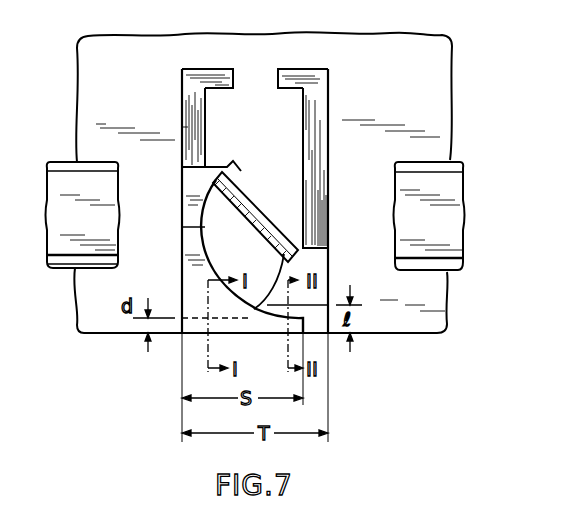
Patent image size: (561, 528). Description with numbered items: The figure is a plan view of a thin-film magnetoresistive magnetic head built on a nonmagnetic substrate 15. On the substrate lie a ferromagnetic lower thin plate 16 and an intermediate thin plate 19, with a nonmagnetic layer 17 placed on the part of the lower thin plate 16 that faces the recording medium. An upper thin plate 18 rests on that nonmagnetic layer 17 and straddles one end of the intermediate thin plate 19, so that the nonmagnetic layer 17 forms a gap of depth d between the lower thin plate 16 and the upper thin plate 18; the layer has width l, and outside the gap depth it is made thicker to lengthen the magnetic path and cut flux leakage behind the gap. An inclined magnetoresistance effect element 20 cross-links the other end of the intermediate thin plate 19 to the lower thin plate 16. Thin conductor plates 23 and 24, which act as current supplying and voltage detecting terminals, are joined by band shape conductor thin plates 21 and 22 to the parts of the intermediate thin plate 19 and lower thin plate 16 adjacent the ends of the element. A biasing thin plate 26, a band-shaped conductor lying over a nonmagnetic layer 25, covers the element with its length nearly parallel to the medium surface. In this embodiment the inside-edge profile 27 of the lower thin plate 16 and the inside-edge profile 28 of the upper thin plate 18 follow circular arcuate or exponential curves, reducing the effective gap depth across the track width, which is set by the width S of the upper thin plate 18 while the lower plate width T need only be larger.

The nonmagnetic substrate 15 is at (437, 98).
The lower thin plate 16 is at (325, 262).
The nonmagnetic layer 17 is at (317, 305).
The upper thin plate 18 is at (190, 250).
The intermediate thin plate 19 is at (190, 192).
The magnetoresistance effect element 20 is at (248, 193).
The band shape conductor thin plate 21 is at (188, 127).
The band shape conductor thin plate 22 is at (322, 128).
The thin conductor plate 23 is at (212, 82).
The thin conductor plate 24 is at (312, 82).
The nonmagnetic layer 25 is at (452, 166).
The biasing thin plate 26 is at (457, 210).
The profile of the inside edge of the lower thin plate 27 is at (281, 285).
The profile of the inside edge of the upper thin plate 28 is at (233, 281).